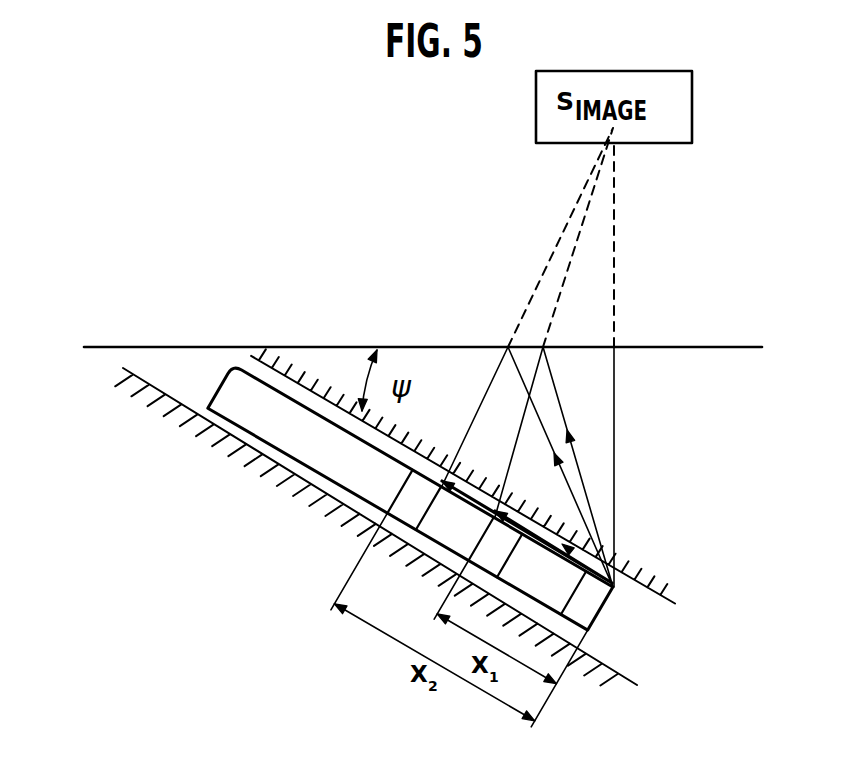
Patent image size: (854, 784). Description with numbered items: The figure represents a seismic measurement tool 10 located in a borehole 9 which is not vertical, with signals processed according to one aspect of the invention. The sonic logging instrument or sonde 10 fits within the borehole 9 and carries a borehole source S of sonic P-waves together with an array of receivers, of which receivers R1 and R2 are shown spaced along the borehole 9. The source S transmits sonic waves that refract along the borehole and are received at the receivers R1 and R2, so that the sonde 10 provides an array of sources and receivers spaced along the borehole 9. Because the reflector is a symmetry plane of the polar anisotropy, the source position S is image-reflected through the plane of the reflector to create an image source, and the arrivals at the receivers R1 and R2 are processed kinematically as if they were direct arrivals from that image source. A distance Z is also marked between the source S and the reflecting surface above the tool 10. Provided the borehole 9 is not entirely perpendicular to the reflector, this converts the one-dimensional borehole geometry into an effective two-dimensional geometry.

The sonic logging tool 10 is at (248, 389).
The borehole 9 is at (652, 601).
The receiver R1 is at (496, 547).
The receiver R2 is at (414, 500).
The borehole source S is at (577, 598).
The standoff distance Z is at (628, 467).